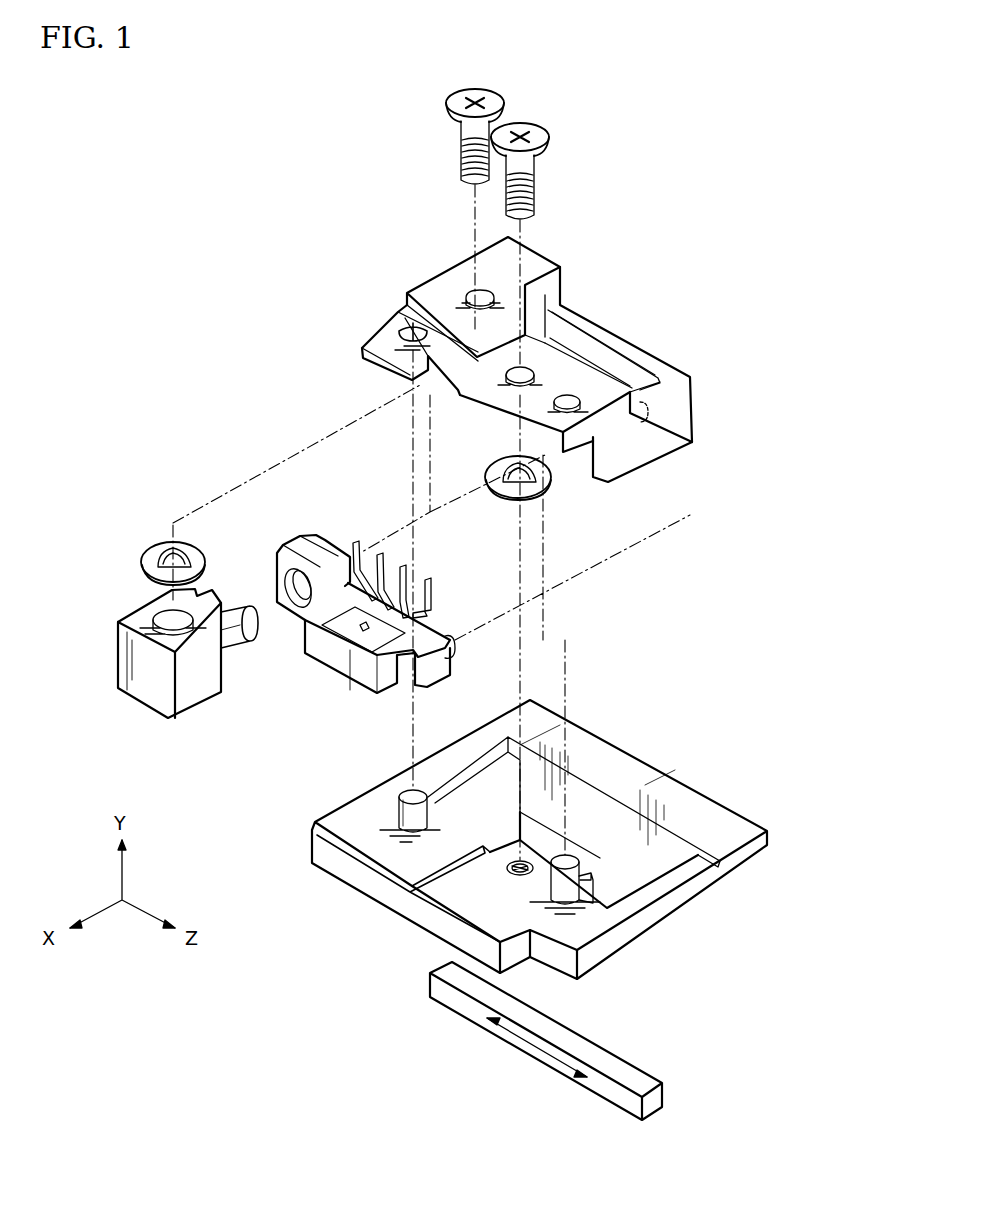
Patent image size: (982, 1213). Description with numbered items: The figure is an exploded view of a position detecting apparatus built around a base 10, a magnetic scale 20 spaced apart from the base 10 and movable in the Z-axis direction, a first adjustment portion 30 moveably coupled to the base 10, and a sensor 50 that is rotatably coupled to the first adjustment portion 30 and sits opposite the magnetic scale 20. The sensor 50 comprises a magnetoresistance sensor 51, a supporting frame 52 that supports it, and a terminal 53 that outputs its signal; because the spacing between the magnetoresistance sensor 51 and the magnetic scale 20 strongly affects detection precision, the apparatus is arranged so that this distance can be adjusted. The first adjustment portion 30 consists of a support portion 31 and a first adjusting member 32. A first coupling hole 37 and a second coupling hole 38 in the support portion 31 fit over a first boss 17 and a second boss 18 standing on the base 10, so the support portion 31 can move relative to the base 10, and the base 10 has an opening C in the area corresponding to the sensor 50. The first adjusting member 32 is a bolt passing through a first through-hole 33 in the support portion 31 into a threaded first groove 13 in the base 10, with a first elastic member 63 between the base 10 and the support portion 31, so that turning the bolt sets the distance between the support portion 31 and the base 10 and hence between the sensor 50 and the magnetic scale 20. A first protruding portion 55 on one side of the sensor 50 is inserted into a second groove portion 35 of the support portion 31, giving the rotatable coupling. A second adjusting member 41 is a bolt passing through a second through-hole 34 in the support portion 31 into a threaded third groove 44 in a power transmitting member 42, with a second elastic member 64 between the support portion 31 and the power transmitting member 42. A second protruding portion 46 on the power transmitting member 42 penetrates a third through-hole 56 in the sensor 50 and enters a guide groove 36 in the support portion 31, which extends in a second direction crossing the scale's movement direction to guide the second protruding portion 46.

The base 10 is at (633, 908).
The first groove 13 is at (520, 880).
The first boss 17 is at (398, 808).
The second boss 18 is at (588, 905).
The magnetic scale 20 is at (450, 1000).
The first adjustment portion 30 is at (660, 222).
The support portion 31 is at (620, 328).
The first adjusting member 32 is at (537, 187).
The first through-hole 33 is at (500, 372).
The second through-hole 34 is at (462, 300).
The second groove portion 35 is at (640, 420).
The guide groove 36 is at (536, 315).
The first coupling hole 37 is at (405, 330).
The second coupling hole 38 is at (618, 382).
The second adjusting member 41 is at (463, 138).
The power transmitting member 42 is at (120, 660).
The third groove 44 is at (165, 613).
The second protruding portion 46 is at (248, 630).
The sensor 50 is at (318, 690).
The magnetoresistance sensor 51 is at (345, 633).
The supporting frame 52 is at (362, 672).
The terminal 53 is at (432, 587).
The first protruding portion 55 is at (458, 645).
The third through-hole 56 is at (285, 580).
The first elastic member 63 is at (492, 488).
The second elastic member 64 is at (148, 560).
The opening C is at (592, 860).